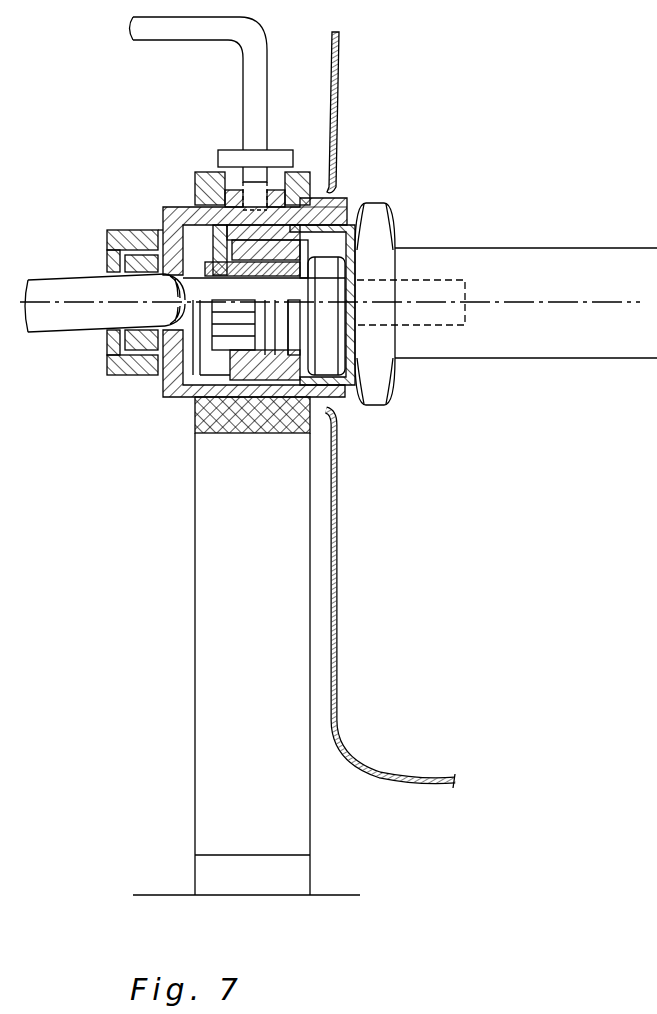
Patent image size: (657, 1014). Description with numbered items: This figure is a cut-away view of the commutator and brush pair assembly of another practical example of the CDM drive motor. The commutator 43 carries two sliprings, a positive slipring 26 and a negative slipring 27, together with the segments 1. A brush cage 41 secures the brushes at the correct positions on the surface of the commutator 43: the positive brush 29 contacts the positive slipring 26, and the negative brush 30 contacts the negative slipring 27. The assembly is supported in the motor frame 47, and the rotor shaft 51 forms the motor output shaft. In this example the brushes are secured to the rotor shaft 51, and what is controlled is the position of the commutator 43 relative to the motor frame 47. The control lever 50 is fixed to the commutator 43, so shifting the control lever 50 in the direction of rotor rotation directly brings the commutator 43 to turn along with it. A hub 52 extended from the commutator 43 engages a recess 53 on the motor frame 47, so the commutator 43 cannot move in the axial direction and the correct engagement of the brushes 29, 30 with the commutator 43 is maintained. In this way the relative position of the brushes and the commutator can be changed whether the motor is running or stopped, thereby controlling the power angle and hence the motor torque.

The segments 1 is at (196, 417).
The positive slipring 26 is at (277, 347).
The negative slipring 27 is at (240, 357).
The positive brush 29 is at (323, 202).
The negative brush 30 is at (291, 342).
The brush cage 41 is at (348, 382).
The commutator 43 is at (337, 205).
The motor frame 47 is at (337, 88).
The control lever 50 is at (247, 86).
The rotor shaft 51 is at (428, 350).
The hub 52 is at (187, 400).
The recess 53 is at (333, 440).